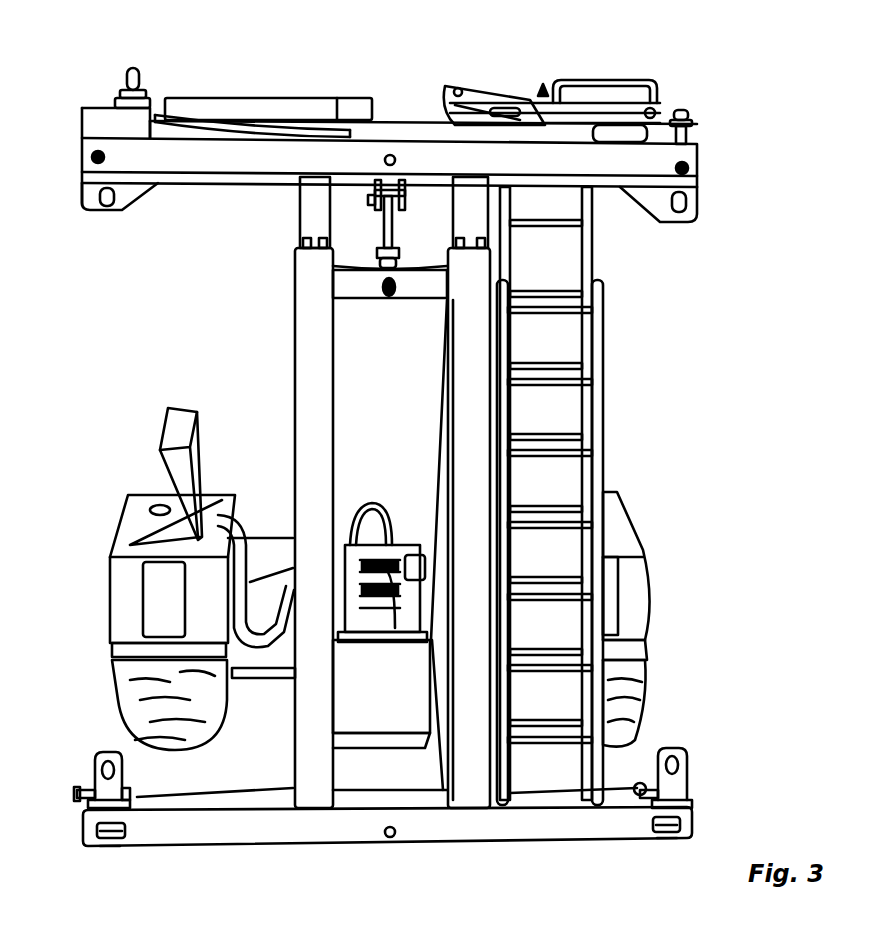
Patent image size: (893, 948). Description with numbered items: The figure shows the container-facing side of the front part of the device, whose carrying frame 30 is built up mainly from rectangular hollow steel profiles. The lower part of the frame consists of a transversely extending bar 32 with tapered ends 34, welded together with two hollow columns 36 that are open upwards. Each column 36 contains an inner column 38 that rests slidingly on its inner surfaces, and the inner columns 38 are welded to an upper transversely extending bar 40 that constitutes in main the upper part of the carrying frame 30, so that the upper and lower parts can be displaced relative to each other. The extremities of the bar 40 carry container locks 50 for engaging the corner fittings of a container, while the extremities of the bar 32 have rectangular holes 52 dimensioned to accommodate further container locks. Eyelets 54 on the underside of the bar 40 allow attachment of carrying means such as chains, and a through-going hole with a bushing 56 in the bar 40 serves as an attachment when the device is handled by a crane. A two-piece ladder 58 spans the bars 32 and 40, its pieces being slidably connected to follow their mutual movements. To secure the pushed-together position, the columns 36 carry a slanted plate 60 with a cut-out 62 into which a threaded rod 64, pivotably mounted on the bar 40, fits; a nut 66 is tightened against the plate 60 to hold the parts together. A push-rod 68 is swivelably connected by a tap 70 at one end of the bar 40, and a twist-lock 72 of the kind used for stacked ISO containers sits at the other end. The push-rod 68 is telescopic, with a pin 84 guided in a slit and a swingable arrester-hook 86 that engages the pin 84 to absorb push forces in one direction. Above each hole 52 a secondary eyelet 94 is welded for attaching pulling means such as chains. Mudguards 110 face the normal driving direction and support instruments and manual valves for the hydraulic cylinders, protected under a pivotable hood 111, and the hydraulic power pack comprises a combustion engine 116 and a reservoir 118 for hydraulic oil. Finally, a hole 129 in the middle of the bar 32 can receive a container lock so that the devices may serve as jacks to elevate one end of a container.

The carrying frame 30 is at (290, 308).
The transversely extending bar 32 is at (272, 850).
The tapered ends 34 is at (110, 848).
The hollow columns 36 is at (462, 395).
The inner column 38 is at (308, 214).
The transversely extending bar 40 is at (200, 162).
The container locks 50 is at (92, 158).
The rectangular holes 52 is at (97, 830).
The eyelets 54 is at (100, 204).
The bushing 56 is at (391, 154).
The two-piece ladder 58 is at (606, 365).
The slanted plate 60 is at (421, 297).
The cut-out 62 is at (387, 296).
The threaded rod 64 is at (397, 258).
The nut 66 is at (384, 222).
The push-rod 68 is at (252, 96).
The tap 70 is at (690, 110).
The twist-lock 72 is at (120, 86).
The pin 84 is at (655, 100).
The arrester-hook 86 is at (540, 100).
The secondary eyelet 94 is at (104, 756).
The mudguard 110 is at (120, 592).
The pivotable hood 111 is at (172, 428).
The combustion engine 116 is at (372, 520).
The reservoir 118 is at (398, 702).
The hole 129 is at (394, 838).